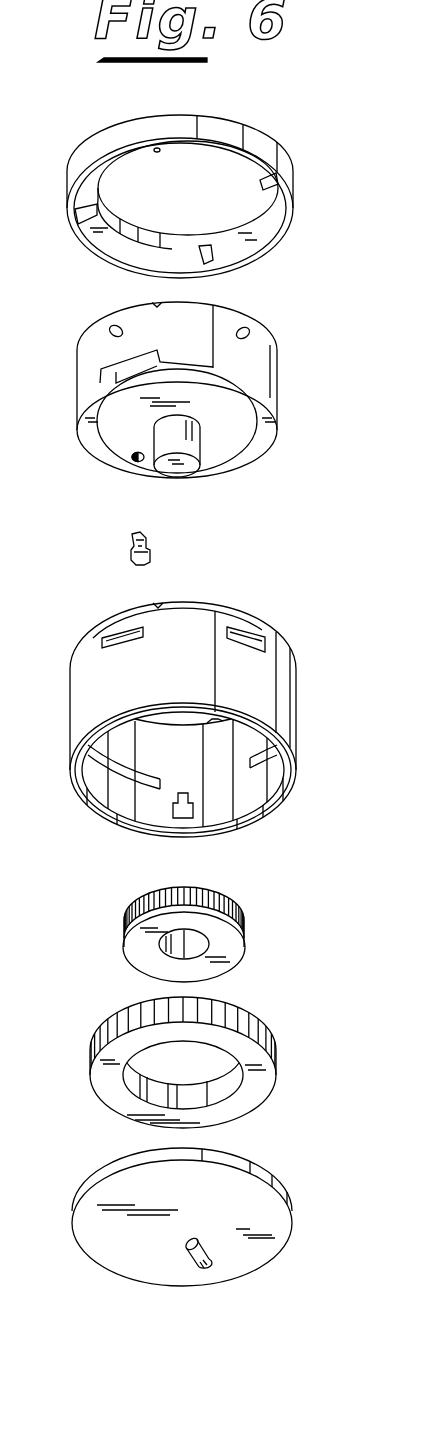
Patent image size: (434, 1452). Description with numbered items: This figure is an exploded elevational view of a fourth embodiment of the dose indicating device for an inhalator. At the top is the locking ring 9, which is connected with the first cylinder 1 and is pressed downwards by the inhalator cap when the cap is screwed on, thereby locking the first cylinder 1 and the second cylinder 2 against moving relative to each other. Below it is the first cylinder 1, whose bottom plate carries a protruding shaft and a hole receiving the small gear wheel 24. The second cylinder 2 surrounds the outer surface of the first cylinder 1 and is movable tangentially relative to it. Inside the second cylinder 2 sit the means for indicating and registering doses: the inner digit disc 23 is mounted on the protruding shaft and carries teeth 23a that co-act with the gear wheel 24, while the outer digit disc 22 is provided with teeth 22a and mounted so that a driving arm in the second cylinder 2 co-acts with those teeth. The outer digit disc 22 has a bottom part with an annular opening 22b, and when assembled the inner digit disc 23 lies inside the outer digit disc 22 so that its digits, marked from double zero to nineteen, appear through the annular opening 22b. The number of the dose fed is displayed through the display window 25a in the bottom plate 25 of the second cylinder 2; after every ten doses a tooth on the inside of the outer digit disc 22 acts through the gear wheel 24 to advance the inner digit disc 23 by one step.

The locking ring 9 is at (264, 125).
The first cylinder 1 is at (270, 323).
The gear wheel 24 is at (155, 553).
The second cylinder 2 is at (258, 617).
The inner digit disc 23 is at (122, 913).
The gear teeth 23a is at (228, 900).
The outer digit disc 22 is at (112, 1018).
The teeth 22a is at (255, 1024).
The annular opening 22b is at (222, 1073).
The bottom plate 25 is at (98, 1165).
The display window 25a is at (210, 1258).